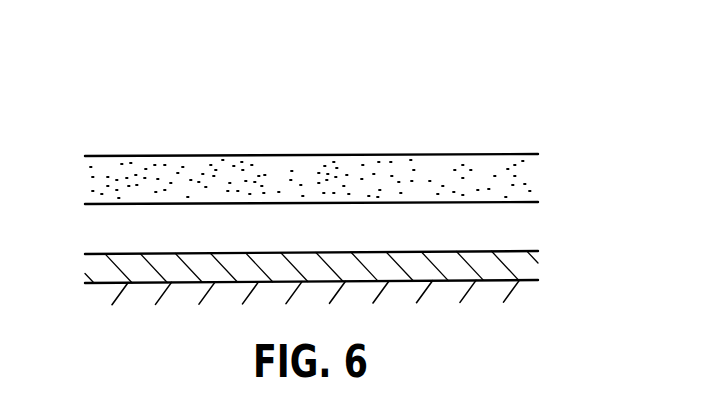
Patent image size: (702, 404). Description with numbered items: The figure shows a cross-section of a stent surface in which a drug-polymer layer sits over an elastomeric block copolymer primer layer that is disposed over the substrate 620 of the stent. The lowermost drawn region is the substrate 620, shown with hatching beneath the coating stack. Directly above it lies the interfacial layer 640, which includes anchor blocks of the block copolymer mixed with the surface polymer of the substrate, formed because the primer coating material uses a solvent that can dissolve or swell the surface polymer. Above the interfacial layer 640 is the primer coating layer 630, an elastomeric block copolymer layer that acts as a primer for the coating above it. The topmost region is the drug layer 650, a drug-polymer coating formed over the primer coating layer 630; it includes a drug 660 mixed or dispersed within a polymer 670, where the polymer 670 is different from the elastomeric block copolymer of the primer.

The substrate 620 is at (512, 288).
The primer coating layer 630 is at (545, 202).
The interfacial layer 640 is at (545, 251).
The drug layer 650 is at (545, 154).
The drug 660 is at (260, 178).
The polymer 670 is at (330, 172).